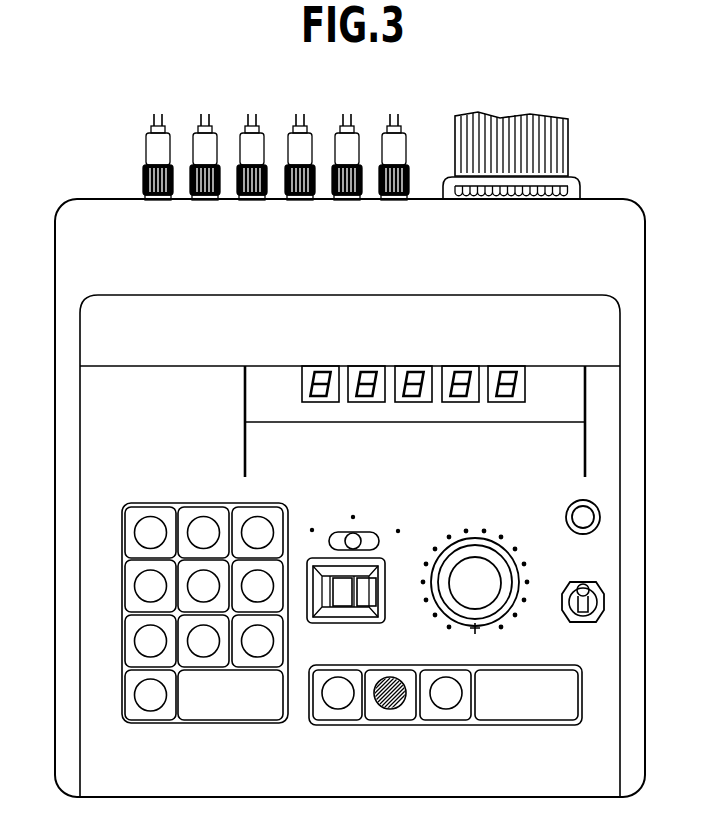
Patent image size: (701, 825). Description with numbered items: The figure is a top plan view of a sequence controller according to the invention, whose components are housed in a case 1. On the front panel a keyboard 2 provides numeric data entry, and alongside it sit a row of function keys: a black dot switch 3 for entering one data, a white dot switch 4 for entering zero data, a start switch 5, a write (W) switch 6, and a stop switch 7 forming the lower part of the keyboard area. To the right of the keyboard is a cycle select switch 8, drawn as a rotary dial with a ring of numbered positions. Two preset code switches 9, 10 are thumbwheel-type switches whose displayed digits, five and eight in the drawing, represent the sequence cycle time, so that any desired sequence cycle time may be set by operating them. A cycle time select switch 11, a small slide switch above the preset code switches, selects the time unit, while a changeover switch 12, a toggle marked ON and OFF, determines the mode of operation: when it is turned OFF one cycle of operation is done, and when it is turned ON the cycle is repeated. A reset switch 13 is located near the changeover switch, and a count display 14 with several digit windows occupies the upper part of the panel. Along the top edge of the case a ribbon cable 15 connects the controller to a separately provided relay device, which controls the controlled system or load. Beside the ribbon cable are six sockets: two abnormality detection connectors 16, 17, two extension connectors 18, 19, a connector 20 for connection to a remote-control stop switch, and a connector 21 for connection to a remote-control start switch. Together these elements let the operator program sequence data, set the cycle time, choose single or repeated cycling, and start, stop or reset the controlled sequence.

The case 1 is at (58, 340).
The keyboard 2 is at (209, 503).
The black dot switch 3 is at (391, 712).
The white dot switch 4 is at (446, 712).
The start switch 5 is at (529, 712).
The write (W) switch 6 is at (338, 712).
The stop switch 7 is at (233, 721).
The cycle select switch 8 is at (473, 540).
The preset code switch 9 is at (369, 607).
The preset code switch 10 is at (346, 607).
The cycle time select switch 11 is at (350, 533).
The changeover switch 12 is at (606, 603).
The reset switch 13 is at (584, 500).
The count display 14 is at (447, 370).
The ribbon cable 15 is at (520, 128).
The abnormality detection connector 16 is at (158, 114).
The abnormality detection connector 17 is at (205, 114).
The extension connector 18 is at (252, 114).
The extension connector 19 is at (300, 114).
The connector for remote-control stop switch 20 is at (347, 114).
The connector for remote-control start switch 21 is at (394, 114).